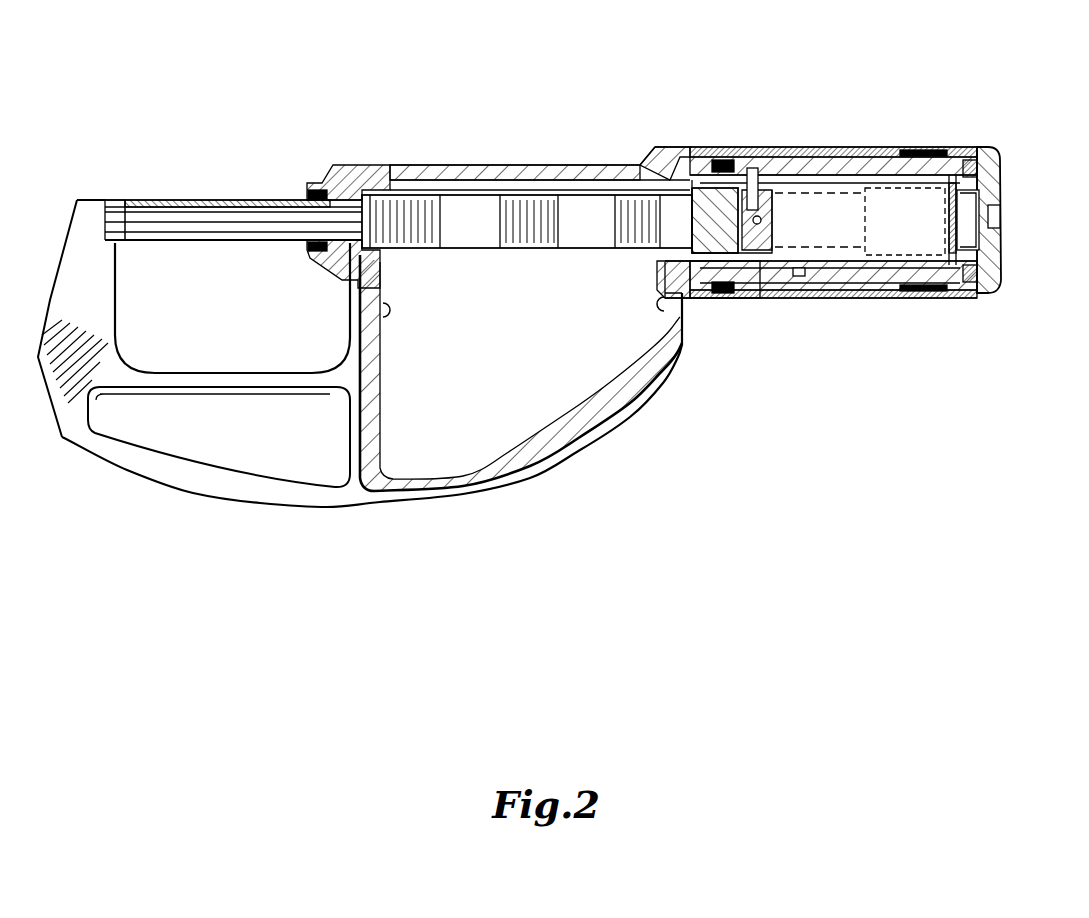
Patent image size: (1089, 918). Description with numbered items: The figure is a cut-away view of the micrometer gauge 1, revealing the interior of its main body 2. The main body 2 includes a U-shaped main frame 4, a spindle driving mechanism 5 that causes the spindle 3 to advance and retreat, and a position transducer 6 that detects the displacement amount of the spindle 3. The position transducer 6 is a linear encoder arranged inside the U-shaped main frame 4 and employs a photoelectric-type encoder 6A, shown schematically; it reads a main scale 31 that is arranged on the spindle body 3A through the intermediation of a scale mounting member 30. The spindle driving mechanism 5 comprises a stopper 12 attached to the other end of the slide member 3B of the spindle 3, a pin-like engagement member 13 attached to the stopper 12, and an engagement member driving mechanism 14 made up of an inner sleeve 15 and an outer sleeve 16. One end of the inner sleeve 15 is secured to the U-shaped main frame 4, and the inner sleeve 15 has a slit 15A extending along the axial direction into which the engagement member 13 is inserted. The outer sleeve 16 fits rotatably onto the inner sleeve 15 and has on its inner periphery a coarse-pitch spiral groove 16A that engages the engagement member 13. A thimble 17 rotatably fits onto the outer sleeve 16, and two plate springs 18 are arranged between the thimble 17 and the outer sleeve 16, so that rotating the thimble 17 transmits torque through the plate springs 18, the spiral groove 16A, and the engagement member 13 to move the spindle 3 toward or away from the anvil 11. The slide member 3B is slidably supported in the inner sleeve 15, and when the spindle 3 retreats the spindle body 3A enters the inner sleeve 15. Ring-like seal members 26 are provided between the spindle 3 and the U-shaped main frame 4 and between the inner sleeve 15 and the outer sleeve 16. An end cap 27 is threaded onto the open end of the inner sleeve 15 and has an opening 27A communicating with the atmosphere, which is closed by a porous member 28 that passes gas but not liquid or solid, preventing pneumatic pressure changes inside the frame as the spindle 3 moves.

The micrometer gauge 1 is at (663, 122).
The main body 2 is at (346, 512).
The spindle 3 is at (219, 246).
The spindle body 3A is at (190, 206).
The slide member 3B is at (688, 176).
The U-shaped main frame 4 is at (222, 492).
The spindle driving mechanism 5 is at (742, 86).
The position transducer 6 is at (478, 330).
The photoelectric-type encoder 6A is at (522, 294).
The anvil 11 is at (118, 200).
The stopper 12 is at (770, 216).
The engagement member 13 is at (748, 187).
The engagement member driving mechanism 14 is at (811, 146).
The inner sleeve 15 is at (833, 298).
The slit 15A is at (948, 175).
The outer sleeve 16 is at (753, 299).
The spiral groove 16A is at (800, 277).
The thimble 17 is at (735, 294).
The plate springs 18 is at (913, 150).
The seal members 26 is at (307, 192).
The end cap 27 is at (1000, 242).
The opening 27A is at (999, 213).
The porous member 28 is at (1001, 216).
The scale mounting member 30 is at (412, 194).
The main scale 31 is at (395, 194).